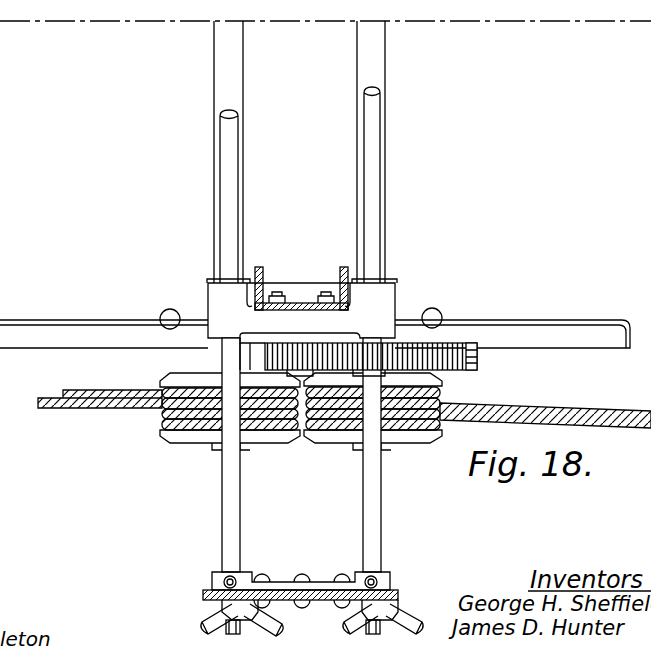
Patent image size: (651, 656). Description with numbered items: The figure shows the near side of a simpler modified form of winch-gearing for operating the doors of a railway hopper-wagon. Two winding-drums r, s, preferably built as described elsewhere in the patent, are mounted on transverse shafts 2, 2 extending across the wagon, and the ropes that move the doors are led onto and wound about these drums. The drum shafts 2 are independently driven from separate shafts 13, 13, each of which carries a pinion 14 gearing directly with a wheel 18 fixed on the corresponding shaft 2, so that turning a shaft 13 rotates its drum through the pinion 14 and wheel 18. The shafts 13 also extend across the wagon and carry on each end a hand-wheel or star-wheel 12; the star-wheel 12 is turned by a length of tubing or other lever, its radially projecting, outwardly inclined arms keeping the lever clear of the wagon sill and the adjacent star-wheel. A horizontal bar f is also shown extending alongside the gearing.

The shaft 2 is at (232, 62).
The pinion 14 is at (393, 343).
The horizontal bar f is at (315, 322).
The winding-drum r is at (262, 440).
The winding-drum s is at (340, 440).
The shaft 13 is at (233, 535).
The wheel 18 is at (479, 357).
The star-wheel 12 is at (347, 622).